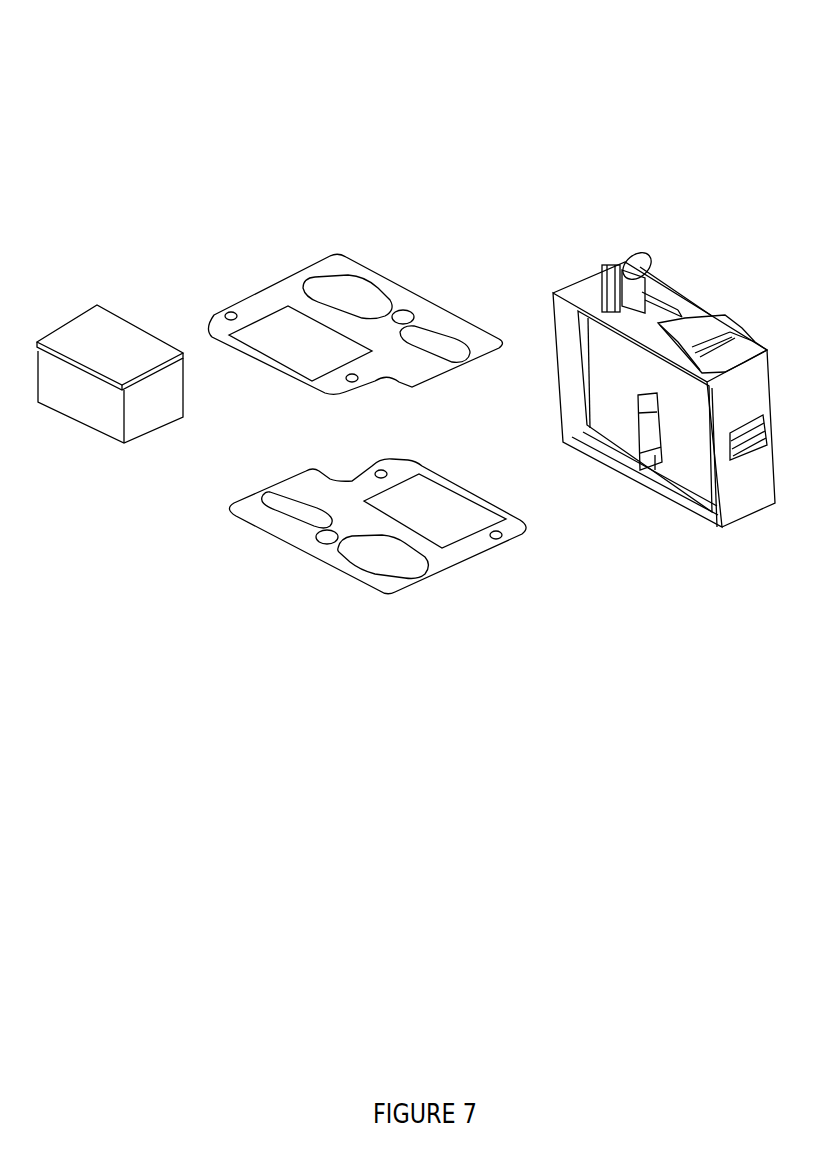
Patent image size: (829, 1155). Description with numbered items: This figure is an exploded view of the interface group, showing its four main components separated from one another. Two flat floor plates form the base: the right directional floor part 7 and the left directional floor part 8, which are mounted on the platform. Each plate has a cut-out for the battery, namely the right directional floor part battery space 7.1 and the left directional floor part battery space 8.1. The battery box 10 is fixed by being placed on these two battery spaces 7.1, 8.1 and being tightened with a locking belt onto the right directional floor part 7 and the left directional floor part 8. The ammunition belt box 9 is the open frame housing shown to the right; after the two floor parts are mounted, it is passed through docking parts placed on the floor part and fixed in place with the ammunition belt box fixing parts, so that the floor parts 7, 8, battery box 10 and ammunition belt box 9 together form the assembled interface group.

The right directional floor part 7 is at (355, 202).
The right directional floor part battery space 7.1 is at (268, 332).
The left directional floor part 8 is at (432, 628).
The left directional floor part battery space 8.1 is at (450, 515).
The ammunition belt box 9 is at (700, 327).
The battery box 10 is at (102, 355).